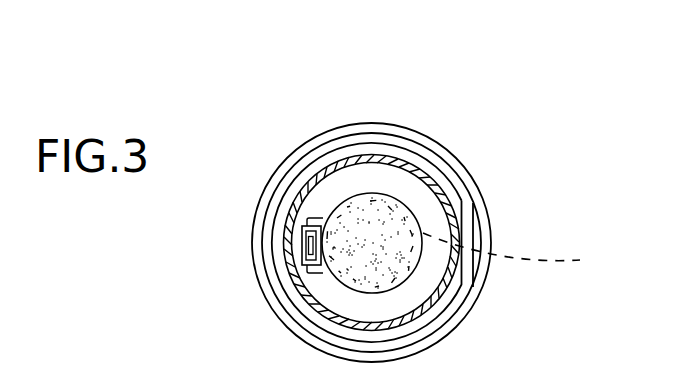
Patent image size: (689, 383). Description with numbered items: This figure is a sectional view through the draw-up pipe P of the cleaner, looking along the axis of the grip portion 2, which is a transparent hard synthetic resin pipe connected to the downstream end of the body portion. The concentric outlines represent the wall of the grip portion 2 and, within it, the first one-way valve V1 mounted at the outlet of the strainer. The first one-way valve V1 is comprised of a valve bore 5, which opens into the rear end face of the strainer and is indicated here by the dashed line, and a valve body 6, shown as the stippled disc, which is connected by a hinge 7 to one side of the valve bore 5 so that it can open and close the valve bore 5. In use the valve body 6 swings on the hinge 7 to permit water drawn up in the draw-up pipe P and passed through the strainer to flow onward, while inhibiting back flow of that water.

The draw-up pipe P is at (415, 115).
The grip portion 2 is at (363, 133).
The valve bore 5 is at (513, 252).
The valve body 6 is at (405, 266).
The hinge 7 is at (308, 248).
The first one-way valve V1 is at (419, 215).